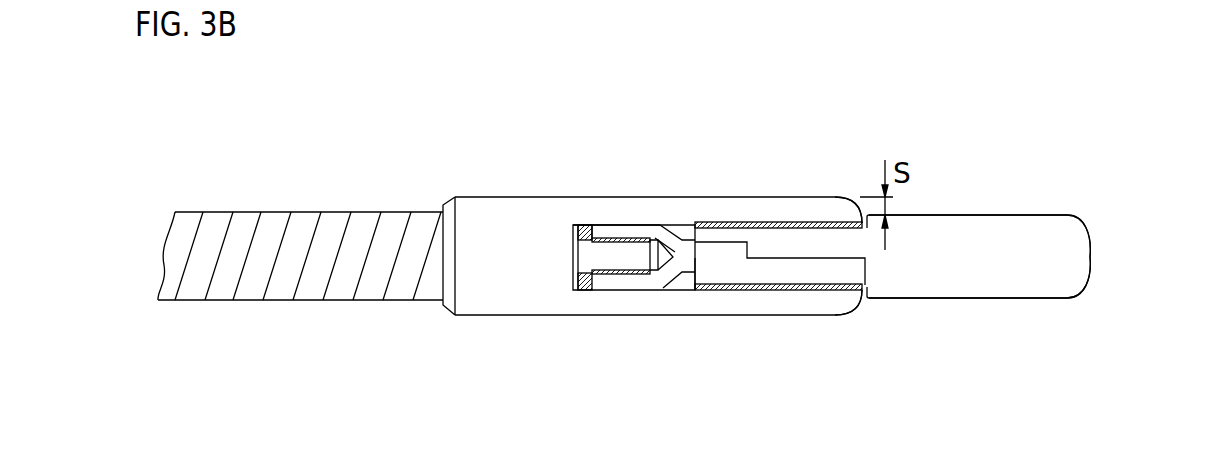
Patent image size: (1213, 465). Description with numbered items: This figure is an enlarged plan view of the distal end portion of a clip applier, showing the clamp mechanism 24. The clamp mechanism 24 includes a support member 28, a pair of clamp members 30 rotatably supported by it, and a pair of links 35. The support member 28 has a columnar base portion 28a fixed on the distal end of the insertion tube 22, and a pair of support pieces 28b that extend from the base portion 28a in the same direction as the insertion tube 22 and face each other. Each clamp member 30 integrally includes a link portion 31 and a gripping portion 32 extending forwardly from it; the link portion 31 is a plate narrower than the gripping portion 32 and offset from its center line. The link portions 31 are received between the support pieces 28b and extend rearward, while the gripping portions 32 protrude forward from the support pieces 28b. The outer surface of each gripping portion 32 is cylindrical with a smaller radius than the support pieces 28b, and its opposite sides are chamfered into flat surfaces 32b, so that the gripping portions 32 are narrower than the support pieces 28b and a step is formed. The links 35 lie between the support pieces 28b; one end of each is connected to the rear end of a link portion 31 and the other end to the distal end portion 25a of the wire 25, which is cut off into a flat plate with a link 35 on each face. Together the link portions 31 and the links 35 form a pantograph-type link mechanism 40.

The insertion tube 22 is at (313, 210).
The clamp mechanism 24 is at (806, 197).
The wire 25 is at (573, 258).
The distal end portion of the wire 25a is at (628, 218).
The support member 28 is at (545, 197).
The base portion 28a is at (477, 217).
The support pieces 28b is at (818, 197).
The clamp members 30 is at (998, 210).
The link portion 31 is at (762, 220).
The gripping portion 32 is at (1040, 253).
The flat surfaces 32b is at (970, 213).
The links 35 is at (660, 222).
The pantograph-type link mechanism 40 is at (690, 222).